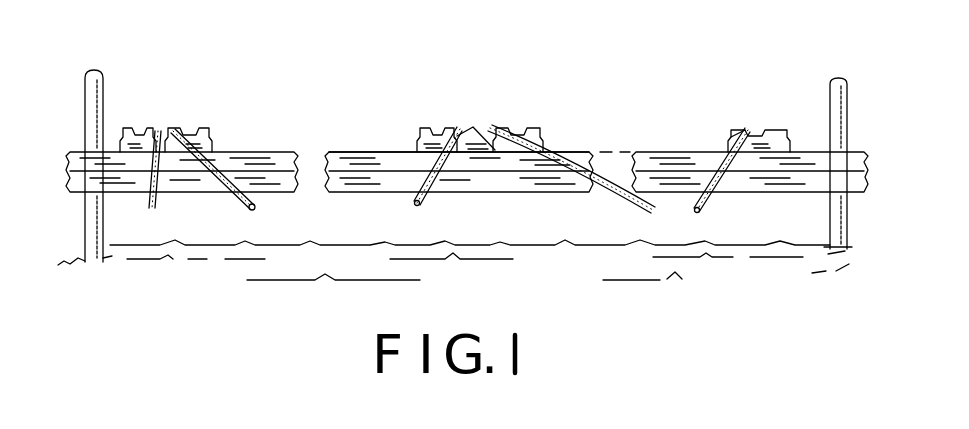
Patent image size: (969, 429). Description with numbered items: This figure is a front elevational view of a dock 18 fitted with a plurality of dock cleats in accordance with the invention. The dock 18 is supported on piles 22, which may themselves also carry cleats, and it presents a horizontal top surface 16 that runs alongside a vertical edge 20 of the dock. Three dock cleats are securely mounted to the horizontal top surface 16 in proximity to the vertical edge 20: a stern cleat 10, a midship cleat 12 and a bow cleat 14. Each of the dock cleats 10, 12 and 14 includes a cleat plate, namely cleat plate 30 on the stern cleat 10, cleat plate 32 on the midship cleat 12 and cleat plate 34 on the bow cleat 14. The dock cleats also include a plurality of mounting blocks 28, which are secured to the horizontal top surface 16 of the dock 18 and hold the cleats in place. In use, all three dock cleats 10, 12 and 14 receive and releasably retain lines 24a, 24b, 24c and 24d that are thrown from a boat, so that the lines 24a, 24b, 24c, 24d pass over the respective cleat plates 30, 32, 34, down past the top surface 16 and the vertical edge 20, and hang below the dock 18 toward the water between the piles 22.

The stern cleat 10 is at (200, 124).
The midship cleat 12 is at (540, 124).
The bow cleat 14 is at (782, 126).
The horizontal top surface 16 is at (386, 152).
The dock 18 is at (345, 152).
The vertical edge 20 is at (380, 183).
The piles 22 is at (102, 70).
The line 24a is at (252, 210).
The line 24b is at (420, 205).
The line 24c is at (156, 205).
The line 24d is at (700, 212).
The mounting blocks 28 is at (216, 147).
The cleat plate 30 is at (142, 128).
The cleat plate 32 is at (502, 127).
The cleat plate 34 is at (733, 133).